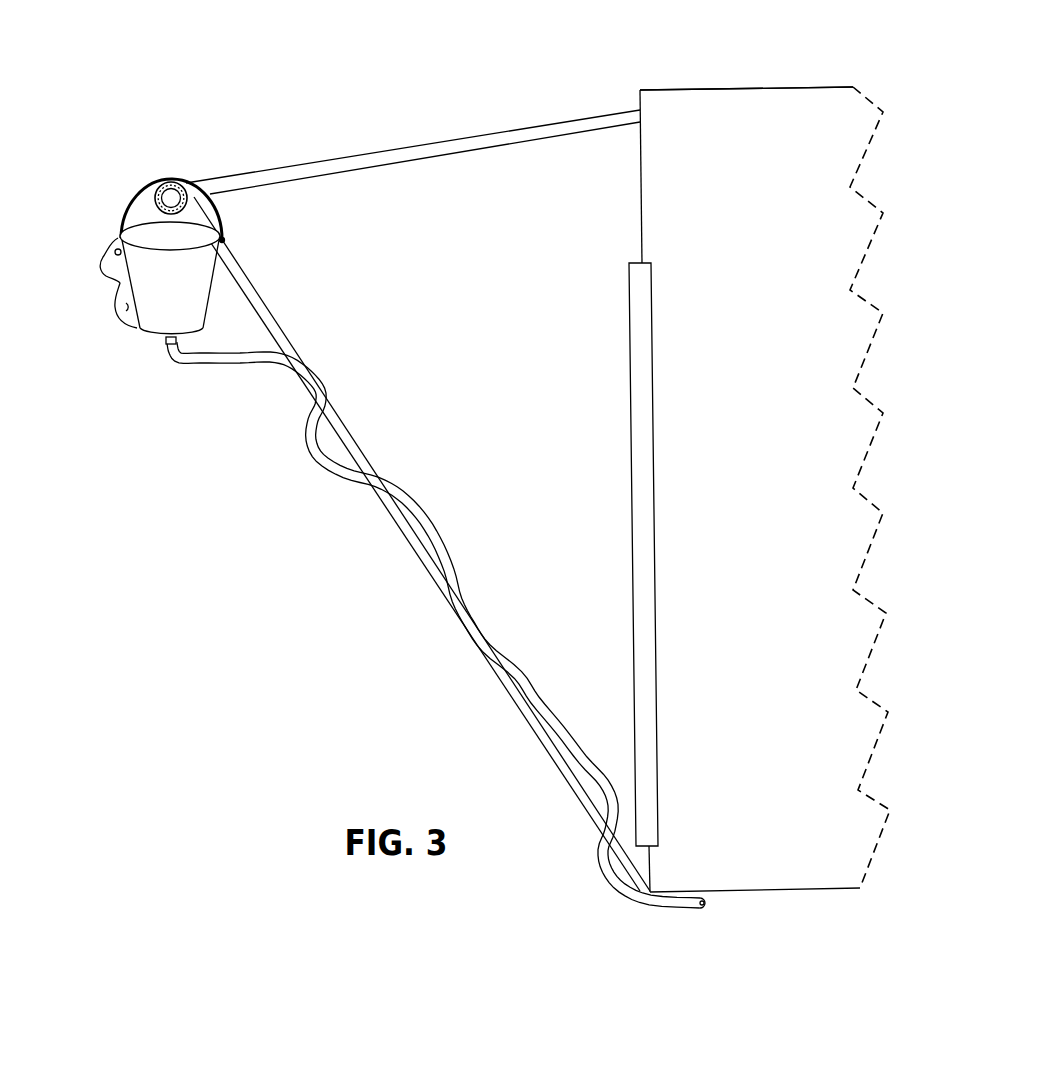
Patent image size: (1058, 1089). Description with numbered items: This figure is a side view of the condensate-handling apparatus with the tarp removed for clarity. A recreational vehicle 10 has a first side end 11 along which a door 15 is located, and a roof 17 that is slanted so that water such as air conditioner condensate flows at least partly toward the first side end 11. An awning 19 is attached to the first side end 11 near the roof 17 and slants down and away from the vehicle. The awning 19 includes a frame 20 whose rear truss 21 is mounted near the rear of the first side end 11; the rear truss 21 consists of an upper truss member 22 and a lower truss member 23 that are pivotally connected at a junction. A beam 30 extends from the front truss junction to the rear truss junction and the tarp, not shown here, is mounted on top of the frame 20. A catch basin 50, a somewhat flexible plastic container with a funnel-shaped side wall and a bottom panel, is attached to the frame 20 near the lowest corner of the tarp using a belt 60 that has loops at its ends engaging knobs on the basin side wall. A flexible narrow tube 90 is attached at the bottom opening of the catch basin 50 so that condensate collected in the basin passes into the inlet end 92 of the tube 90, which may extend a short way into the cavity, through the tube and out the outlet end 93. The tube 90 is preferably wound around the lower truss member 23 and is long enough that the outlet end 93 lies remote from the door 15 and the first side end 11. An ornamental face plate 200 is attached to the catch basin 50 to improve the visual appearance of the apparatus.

The recreational vehicle 10 is at (736, 468).
The first side end 11 is at (642, 178).
The door 15 is at (643, 473).
The roof 17 is at (750, 88).
The awning 19 is at (288, 144).
The frame 20 is at (320, 670).
The rear truss 21 is at (90, 210).
The upper truss member 22 is at (343, 170).
The lower truss member 23 is at (273, 322).
The beam 30 is at (157, 184).
The catch basin 50 is at (111, 327).
The belt 60 is at (218, 215).
The flexible narrow tube 90 is at (433, 530).
The inlet end 92 is at (167, 343).
The outlet end 93 is at (703, 905).
The ornamental face plate 200 is at (120, 280).